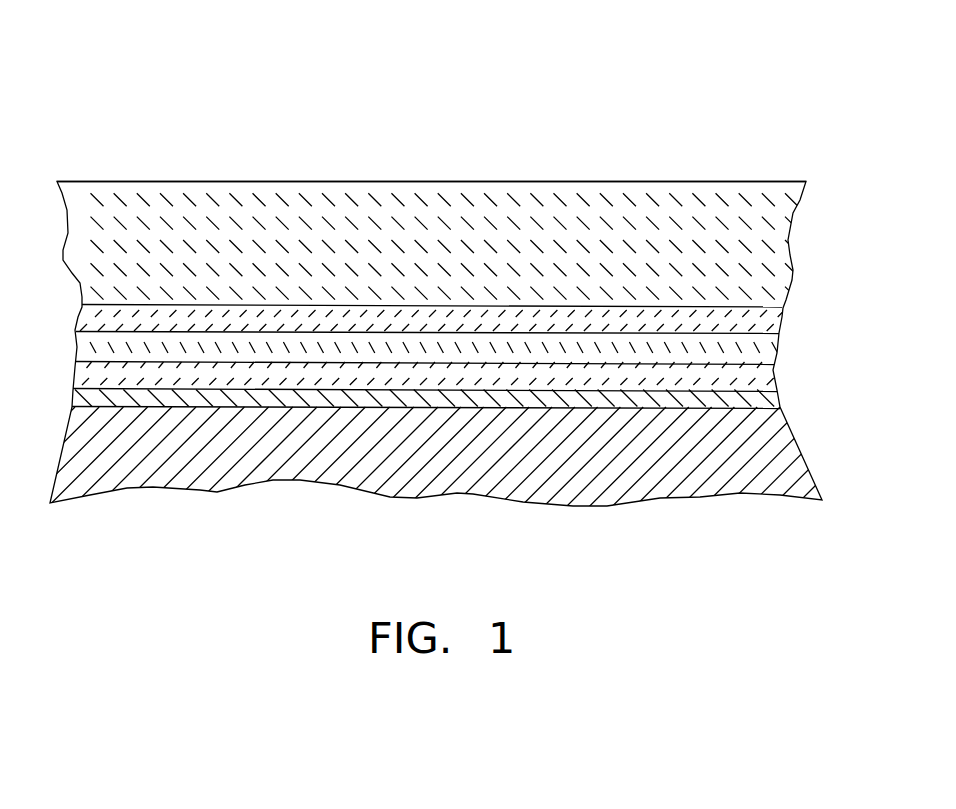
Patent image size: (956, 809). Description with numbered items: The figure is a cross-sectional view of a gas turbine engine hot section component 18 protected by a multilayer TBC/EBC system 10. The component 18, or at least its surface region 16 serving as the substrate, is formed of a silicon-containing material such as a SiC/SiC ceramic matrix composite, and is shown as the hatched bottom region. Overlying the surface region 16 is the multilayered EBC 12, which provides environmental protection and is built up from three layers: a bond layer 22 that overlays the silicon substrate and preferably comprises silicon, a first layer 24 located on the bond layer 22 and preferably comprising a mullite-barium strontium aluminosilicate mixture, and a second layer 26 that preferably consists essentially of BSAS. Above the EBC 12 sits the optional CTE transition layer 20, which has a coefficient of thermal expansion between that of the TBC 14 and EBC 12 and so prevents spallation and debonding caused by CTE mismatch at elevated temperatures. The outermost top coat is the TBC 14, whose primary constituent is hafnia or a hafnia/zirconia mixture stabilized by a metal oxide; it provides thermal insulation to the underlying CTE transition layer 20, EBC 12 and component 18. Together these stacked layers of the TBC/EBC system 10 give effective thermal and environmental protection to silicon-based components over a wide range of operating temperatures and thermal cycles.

The TBC/EBC system 10 is at (527, 70).
The EBC 12 is at (797, 335).
The TBC 14 is at (708, 192).
The surface region 16 is at (155, 482).
The hot section component 18 is at (138, 138).
The CTE transition layer 20 is at (82, 320).
The bond layer 22 is at (778, 405).
The first layer 24 is at (85, 370).
The second layer 26 is at (88, 352).